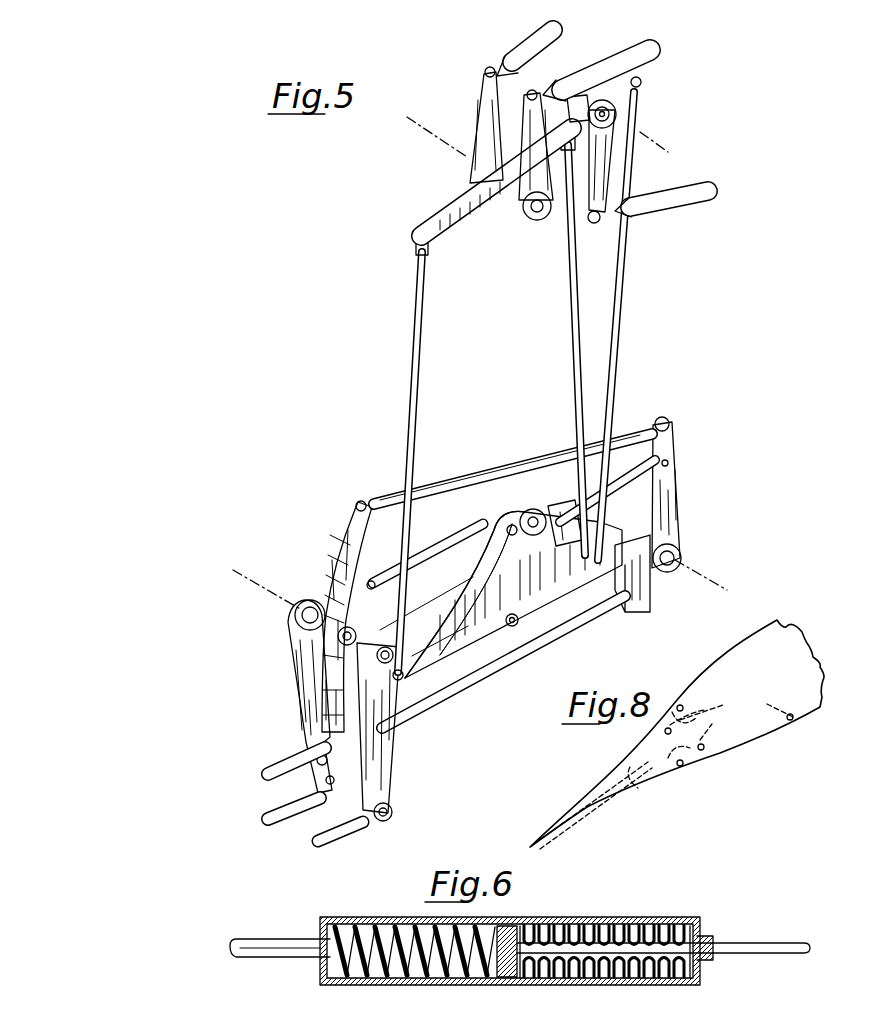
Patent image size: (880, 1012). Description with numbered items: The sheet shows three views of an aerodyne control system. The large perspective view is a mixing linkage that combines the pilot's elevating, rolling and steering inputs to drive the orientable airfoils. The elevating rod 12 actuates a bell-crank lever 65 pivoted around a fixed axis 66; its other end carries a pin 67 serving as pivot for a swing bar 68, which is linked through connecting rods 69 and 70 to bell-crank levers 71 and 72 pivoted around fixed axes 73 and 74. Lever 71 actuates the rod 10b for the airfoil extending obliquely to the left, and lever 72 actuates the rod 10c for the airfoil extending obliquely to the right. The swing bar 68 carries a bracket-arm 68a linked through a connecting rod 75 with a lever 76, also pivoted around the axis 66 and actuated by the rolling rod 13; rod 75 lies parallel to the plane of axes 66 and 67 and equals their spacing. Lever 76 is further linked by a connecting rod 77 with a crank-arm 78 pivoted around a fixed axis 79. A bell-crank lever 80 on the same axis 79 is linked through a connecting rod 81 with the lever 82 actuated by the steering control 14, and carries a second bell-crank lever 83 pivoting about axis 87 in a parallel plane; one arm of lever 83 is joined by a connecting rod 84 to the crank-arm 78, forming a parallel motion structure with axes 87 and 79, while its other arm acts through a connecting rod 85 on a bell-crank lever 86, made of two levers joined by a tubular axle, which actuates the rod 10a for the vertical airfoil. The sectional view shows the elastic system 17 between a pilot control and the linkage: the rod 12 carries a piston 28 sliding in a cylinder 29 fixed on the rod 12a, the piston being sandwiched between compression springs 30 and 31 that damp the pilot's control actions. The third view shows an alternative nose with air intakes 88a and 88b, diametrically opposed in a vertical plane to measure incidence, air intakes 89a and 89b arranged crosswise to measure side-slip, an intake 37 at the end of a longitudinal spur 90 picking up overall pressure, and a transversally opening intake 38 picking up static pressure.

In FIG. 5, the rod 10a is at (638, 49).
In FIG. 5, the rod 10b is at (665, 196).
In FIG. 5, the rod 10c is at (525, 47).
In FIG. 5, the rod 12 is at (316, 828).
In FIG. 6, the rod 12 is at (772, 942).
In FIG. 6, the rod 12a is at (290, 940).
In FIG. 5, the rod 13 is at (280, 763).
In FIG. 5, the steering control 14 is at (273, 807).
In FIG. 6, the elastic system 17 is at (516, 937).
In FIG. 6, the piston 28 is at (505, 967).
In FIG. 6, the cylinder 29 is at (553, 917).
In FIG. 6, the compression spring 30 is at (402, 920).
In FIG. 6, the compression spring 31 is at (613, 917).
In FIG. 8, the air intake 37 is at (528, 847).
In FIG. 8, the air intake 38 is at (793, 719).
In FIG. 5, the bell-crank lever 65 is at (380, 733).
In FIG. 5, the fixed axis 66 is at (286, 596).
In FIG. 5, the pin 67 is at (514, 626).
In FIG. 5, the swing bar 68 is at (540, 607).
In FIG. 5, the bracket-arm 68a is at (506, 510).
In FIG. 5, the connecting rod 69 is at (620, 297).
In FIG. 5, the connecting rod 70 is at (423, 372).
In FIG. 5, the bell-crank lever 71 is at (613, 165).
In FIG. 5, the bell-crank lever 72 is at (468, 215).
In FIG. 5, the fixed axis 73 is at (647, 137).
In FIG. 5, the fixed axis 74 is at (462, 153).
In FIG. 5, the connecting rod 75 is at (432, 552).
In FIG. 5, the lever 76 is at (350, 595).
In FIG. 5, the connecting rod 77 is at (441, 485).
In FIG. 5, the crank-arm 78 is at (667, 480).
In FIG. 5, the fixed axis 79 is at (703, 561).
In FIG. 5, the bell-crank lever 80 is at (643, 587).
In FIG. 5, the connecting rod 81 is at (463, 693).
In FIG. 5, the lever 82 is at (300, 697).
In FIG. 5, the second bell-crank lever 83 is at (550, 486).
In FIG. 5, the connecting rod 84 is at (634, 470).
In FIG. 5, the connecting rod 85 is at (573, 340).
In FIG. 5, the bell-crank lever 86 is at (508, 130).
In FIG. 5, the pivoting axis 87 is at (529, 509).
In FIG. 8, the air intake 88a is at (680, 705).
In FIG. 8, the air intake 88b is at (680, 768).
In FIG. 8, the air intake 89a is at (705, 750).
In FIG. 8, the air intake 89b is at (665, 731).
In FIG. 8, the longitudinal spur 90 is at (605, 787).